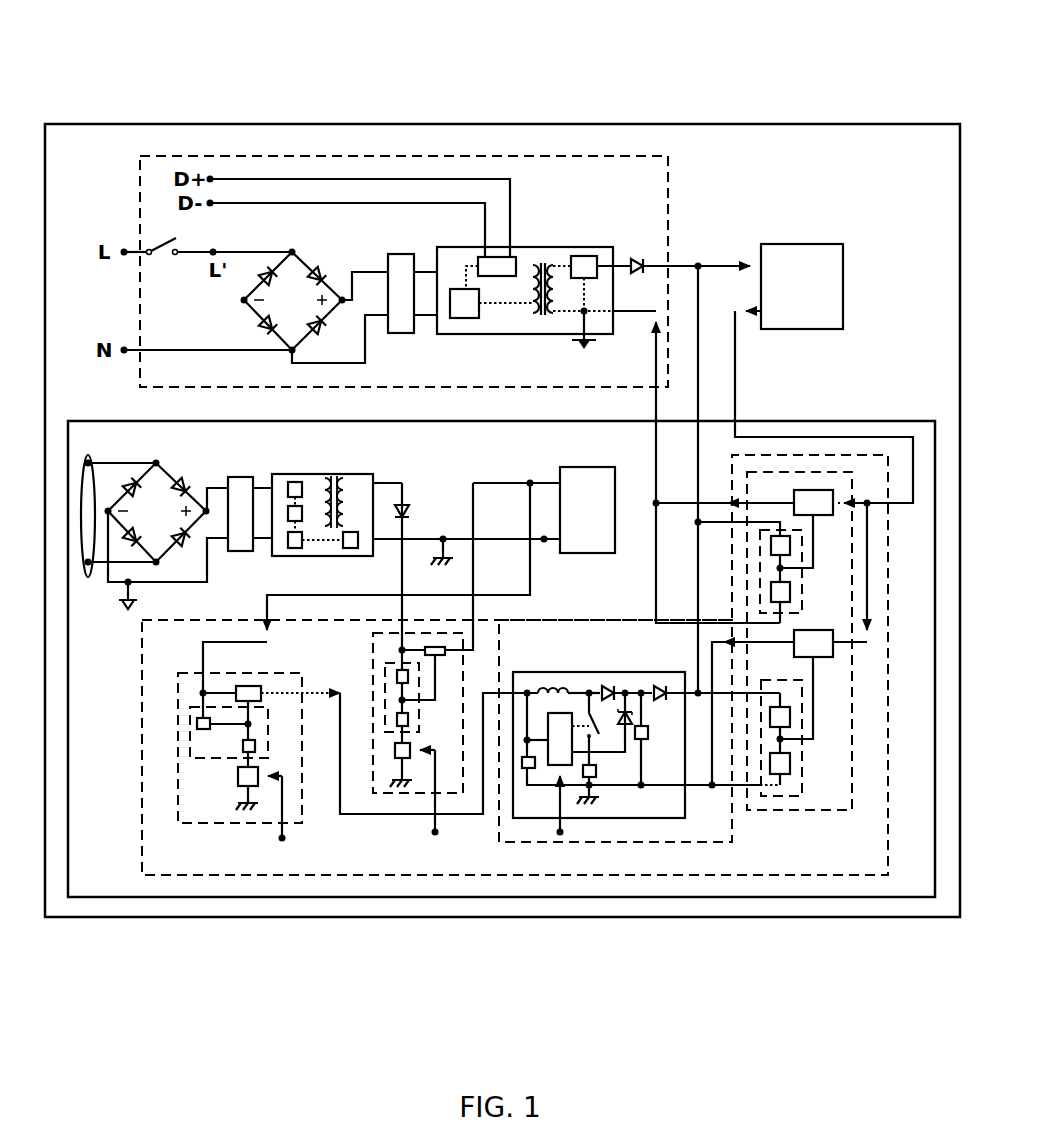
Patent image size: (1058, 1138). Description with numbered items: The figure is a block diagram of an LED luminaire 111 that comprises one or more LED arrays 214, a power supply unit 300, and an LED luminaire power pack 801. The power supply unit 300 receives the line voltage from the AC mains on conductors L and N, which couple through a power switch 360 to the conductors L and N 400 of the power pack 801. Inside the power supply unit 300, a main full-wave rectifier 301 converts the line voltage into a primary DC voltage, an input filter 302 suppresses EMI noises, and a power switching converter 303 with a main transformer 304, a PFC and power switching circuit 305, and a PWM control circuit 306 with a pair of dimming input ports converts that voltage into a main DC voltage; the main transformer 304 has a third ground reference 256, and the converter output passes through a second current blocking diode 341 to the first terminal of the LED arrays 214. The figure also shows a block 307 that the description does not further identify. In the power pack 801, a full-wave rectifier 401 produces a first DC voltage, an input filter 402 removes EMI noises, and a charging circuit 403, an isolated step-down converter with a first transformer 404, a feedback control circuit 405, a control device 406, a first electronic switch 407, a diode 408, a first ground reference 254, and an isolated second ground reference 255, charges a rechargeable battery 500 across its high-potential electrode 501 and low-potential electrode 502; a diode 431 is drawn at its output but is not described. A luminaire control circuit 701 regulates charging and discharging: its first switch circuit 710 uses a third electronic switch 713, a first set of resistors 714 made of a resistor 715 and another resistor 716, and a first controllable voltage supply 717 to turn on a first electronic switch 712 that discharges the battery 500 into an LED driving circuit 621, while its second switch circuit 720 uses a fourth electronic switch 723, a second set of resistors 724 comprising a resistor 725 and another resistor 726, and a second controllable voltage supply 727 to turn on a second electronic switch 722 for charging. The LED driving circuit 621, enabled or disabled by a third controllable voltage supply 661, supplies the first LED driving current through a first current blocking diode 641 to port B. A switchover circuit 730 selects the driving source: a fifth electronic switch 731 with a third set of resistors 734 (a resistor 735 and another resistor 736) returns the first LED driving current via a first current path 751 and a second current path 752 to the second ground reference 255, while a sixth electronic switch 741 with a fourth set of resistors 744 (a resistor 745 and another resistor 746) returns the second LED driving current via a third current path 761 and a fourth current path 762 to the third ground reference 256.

The LED luminaire 111 is at (405, 124).
The power supply unit 300 is at (455, 155).
The main full-wave rectifier 301 is at (277, 243).
The input filter 302 is at (395, 253).
The power switching converter 303 is at (636, 258).
The main transformer 304 is at (543, 262).
The power factor correction and power switching circuit 305 is at (460, 320).
The pulse width modulation control circuit 306 is at (506, 278).
The power converter block 307 is at (618, 246).
The second current blocking diode 341 is at (650, 264).
The power switch 360 is at (155, 250).
The third ground reference 256 is at (579, 345).
The LED arrays 214 is at (795, 243).
The fourth current path 762 is at (662, 318).
The sixth electronic switch 741 is at (822, 489).
The fourth set of one or more resistors 744 is at (757, 543).
The resistor 745 is at (792, 548).
The another resistor 746 is at (792, 598).
The third current path 761 is at (842, 508).
The first current path 751 is at (836, 635).
The second current path 752 is at (710, 641).
The fifth electronic switch 731 is at (820, 660).
The resistor 735 is at (792, 718).
The another resistor 736 is at (785, 776).
The third set of one or more resistors 734 is at (806, 773).
The switchover circuit 730 is at (826, 812).
The electrical conductors L and N 400 is at (84, 470).
The full-wave rectifier 401 is at (147, 457).
The input filter 402 is at (233, 477).
The charging circuit 403 is at (336, 475).
The first transformer 404 is at (375, 492).
The feedback control circuit 405 is at (346, 551).
The control device 406 is at (292, 549).
The first electronic switch 407 is at (287, 523).
The diode 408 is at (296, 482).
The diode 431 is at (406, 508).
The first ground reference 254 is at (124, 611).
The second ground reference 255 is at (452, 562).
The rechargeable battery 500 is at (596, 467).
The high-potential electrode 501 is at (532, 481).
The low-potential electrode 502 is at (547, 544).
The luminaire control circuit 701 is at (490, 876).
The first switch circuit 710 is at (262, 824).
The first electronic switch 712 is at (240, 688).
The first set of one or more resistors 714 is at (186, 722).
The resistor 715 is at (196, 729).
The another resistor 716 is at (258, 746).
The third electronic switch 713 is at (236, 776).
The first controllable voltage supply 717 is at (284, 840).
The second switch circuit 720 is at (463, 793).
The second electronic switch 722 is at (447, 647).
The second set of one or more resistors 724 is at (383, 673).
The resistor 725 is at (396, 676).
The another resistor 726 is at (410, 721).
The fourth electronic switch 723 is at (397, 756).
The second controllable voltage supply 727 is at (435, 834).
The LED driving circuit 621 is at (618, 820).
The first current blocking diode 641 is at (661, 699).
The third controllable voltage supply 661 is at (562, 834).
The LED luminaire power pack 801 is at (782, 898).